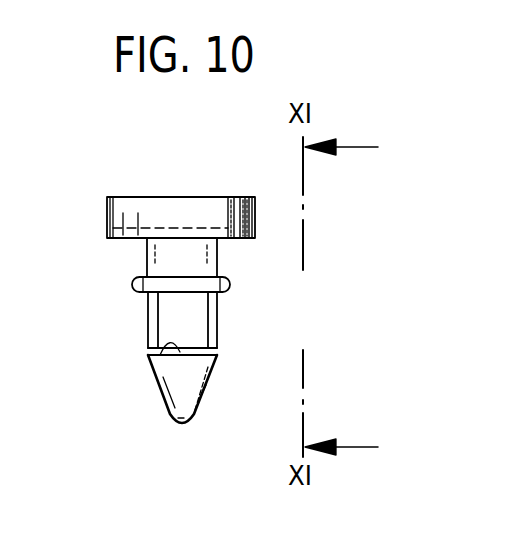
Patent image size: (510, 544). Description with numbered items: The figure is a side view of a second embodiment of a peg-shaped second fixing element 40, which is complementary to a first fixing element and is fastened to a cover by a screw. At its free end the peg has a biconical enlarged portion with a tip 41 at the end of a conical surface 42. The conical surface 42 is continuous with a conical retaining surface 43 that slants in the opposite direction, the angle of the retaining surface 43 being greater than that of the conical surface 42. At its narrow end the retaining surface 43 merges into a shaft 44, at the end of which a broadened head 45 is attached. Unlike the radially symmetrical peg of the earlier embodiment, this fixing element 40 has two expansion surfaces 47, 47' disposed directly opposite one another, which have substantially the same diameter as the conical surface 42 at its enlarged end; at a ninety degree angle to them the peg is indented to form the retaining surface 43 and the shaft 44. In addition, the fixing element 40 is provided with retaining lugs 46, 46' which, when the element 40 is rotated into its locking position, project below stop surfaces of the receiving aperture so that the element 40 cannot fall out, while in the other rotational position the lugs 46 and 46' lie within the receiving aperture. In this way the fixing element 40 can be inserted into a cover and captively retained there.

The second fixing element 40 is at (127, 174).
The broadened head 45 is at (108, 226).
The retaining lug 46 is at (157, 299).
The retaining lug 46' is at (246, 298).
The expansion surface 47 is at (157, 323).
The expansion surface 47' is at (236, 325).
The conical retaining surface 43 is at (156, 380).
The shaft 44 is at (196, 328).
The conical surface 42 is at (202, 402).
The tip 41 is at (186, 428).